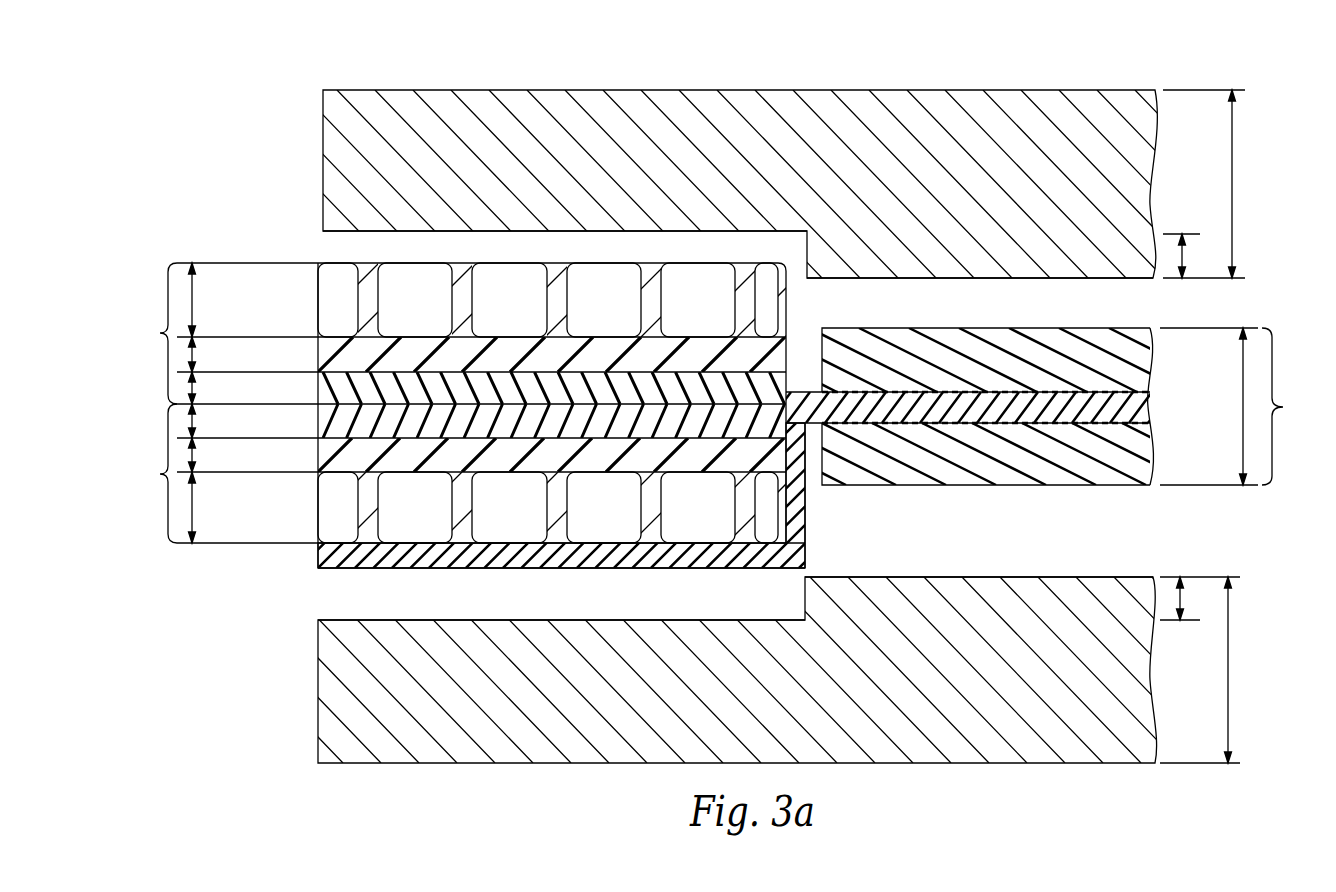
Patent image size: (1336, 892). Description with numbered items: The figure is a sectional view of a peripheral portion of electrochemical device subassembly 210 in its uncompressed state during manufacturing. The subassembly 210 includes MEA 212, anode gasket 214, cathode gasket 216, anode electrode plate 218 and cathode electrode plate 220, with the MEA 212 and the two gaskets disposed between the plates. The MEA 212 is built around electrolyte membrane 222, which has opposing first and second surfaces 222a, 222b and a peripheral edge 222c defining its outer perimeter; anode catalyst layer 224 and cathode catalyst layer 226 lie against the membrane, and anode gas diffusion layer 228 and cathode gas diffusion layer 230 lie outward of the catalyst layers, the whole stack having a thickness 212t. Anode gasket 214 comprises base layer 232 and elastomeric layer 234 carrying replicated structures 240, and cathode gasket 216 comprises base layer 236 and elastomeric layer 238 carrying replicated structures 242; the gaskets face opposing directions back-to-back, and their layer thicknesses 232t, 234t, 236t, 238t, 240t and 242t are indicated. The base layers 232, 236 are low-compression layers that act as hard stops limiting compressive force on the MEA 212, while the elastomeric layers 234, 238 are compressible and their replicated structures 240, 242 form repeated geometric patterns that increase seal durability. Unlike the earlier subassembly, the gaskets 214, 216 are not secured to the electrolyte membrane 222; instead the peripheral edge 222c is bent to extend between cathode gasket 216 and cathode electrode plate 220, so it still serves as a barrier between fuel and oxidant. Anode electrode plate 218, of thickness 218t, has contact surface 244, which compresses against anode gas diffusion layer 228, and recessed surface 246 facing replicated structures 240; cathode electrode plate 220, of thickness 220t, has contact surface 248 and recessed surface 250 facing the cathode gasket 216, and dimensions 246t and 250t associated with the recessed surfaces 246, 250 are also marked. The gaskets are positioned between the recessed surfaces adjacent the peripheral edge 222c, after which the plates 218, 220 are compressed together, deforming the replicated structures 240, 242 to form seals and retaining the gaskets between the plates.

The electrochemical device subassembly 210 is at (1098, 74).
The MEA 212 is at (1298, 406).
The thickness of laminate sheet 212t is at (1215, 406).
The anode gasket 214 is at (138, 333).
The cathode gasket 216 is at (138, 473).
The anode electrode plate 218 is at (1144, 121).
The thickness of upper press plate 218t is at (1213, 184).
The cathode electrode plate 220 is at (1143, 720).
The thickness of lower press plate 220t is at (1208, 670).
The electrolyte membrane 222 is at (1150, 409).
The first surface 222a is at (998, 392).
The second surface 222b is at (998, 424).
The peripheral edge 222c is at (806, 528).
The anode catalyst layer 224 is at (1152, 393).
The cathode catalyst layer 226 is at (1152, 424).
The anode gas diffusion layer 228 is at (1100, 338).
The cathode gas diffusion layer 230 is at (1098, 480).
The base layer 232 is at (323, 393).
The thickness of upper inner ply 232t is at (198, 389).
The elastomeric layer 234 is at (323, 358).
The thickness of upper intermediate ply 234t is at (198, 354).
The base layer 236 is at (323, 425).
The thickness of lower inner ply 236t is at (198, 421).
The elastomeric layer 238 is at (323, 459).
The thickness of lower intermediate ply 238t is at (198, 456).
The replicated structures 240 is at (309, 304).
The thickness of upper ribbed layer 240t is at (195, 300).
The replicated structures 242 is at (309, 507).
The thickness of lower ribbed layer 242t is at (195, 505).
The contact surface 244 is at (980, 293).
The recessed surface 246 is at (334, 232).
The height of upper gap 246t is at (1190, 258).
The contact surface 248 is at (1048, 577).
The recessed surface 250 is at (334, 618).
The height of lower gap 250t is at (1183, 598).